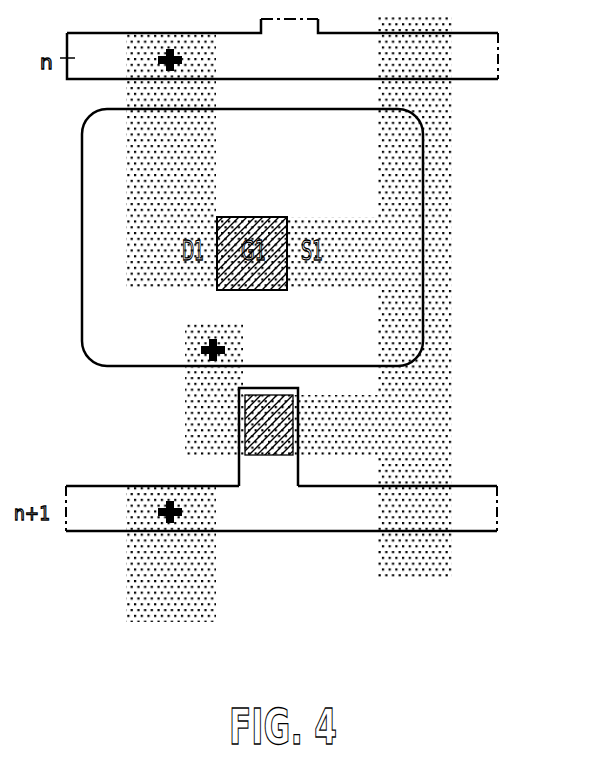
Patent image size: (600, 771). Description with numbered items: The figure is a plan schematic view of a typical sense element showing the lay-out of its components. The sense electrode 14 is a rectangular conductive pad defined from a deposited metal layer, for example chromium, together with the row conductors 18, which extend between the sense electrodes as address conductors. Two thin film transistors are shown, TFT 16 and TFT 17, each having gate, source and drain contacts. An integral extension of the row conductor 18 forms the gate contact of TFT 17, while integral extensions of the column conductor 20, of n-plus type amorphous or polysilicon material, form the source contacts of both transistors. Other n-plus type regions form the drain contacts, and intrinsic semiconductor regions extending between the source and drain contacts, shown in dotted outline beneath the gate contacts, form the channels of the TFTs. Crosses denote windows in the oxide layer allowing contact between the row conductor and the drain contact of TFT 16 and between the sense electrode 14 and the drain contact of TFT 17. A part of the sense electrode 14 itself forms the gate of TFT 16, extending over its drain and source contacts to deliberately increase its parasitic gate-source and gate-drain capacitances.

The sense electrode 14 is at (82, 268).
The TFT 16 is at (277, 215).
The TFT 17 is at (181, 414).
The row conductor 18 is at (481, 81).
The column conductor 20 is at (455, 302).